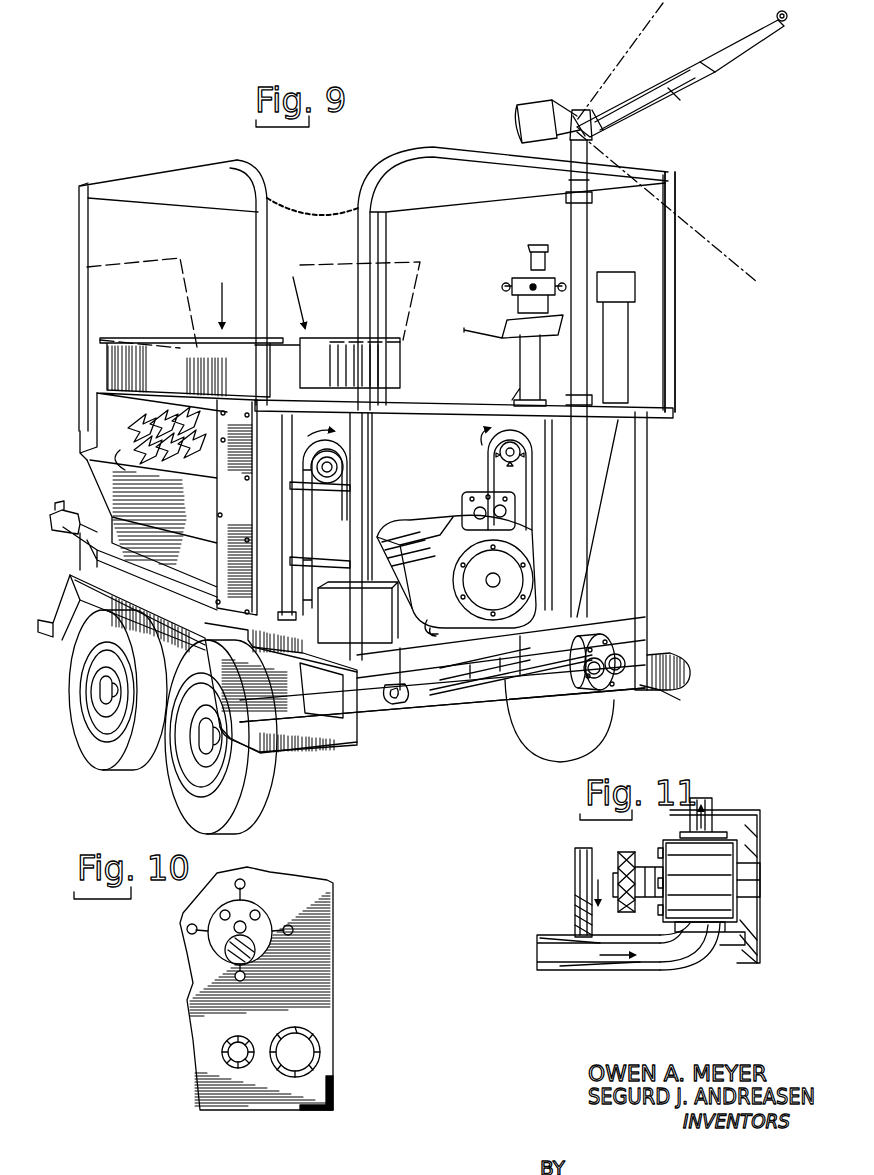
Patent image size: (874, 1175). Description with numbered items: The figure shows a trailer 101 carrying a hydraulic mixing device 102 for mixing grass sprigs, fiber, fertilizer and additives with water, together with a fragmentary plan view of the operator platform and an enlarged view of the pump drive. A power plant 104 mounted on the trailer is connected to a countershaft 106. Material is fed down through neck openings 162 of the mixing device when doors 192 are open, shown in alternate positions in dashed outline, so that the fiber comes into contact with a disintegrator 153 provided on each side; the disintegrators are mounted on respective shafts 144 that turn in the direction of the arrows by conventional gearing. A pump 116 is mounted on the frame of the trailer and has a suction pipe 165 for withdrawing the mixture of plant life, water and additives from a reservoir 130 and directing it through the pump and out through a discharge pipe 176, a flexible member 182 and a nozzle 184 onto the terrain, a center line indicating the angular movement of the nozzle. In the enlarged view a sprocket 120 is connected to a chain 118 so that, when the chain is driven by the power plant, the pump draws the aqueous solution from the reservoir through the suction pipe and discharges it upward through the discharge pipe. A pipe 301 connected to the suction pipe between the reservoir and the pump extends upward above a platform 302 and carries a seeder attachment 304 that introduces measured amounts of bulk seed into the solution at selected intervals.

In FIG. 9, the trailer 101 is at (413, 742).
In FIG. 9, the hydraulic mixing device 102 is at (74, 428).
In FIG. 9, the power plant 104 is at (390, 525).
In FIG. 9, the countershaft 106 is at (345, 704).
In FIG. 9, the pump 116 is at (597, 677).
In FIG. 11, the pump 116 is at (727, 872).
In FIG. 9, the chain 118 is at (447, 692).
In FIG. 11, the chain 118 is at (620, 852).
In FIG. 11, the sprocket 120 is at (636, 852).
In FIG. 9, the reservoir 130 is at (97, 477).
In FIG. 9, the shafts 144 is at (332, 467).
In FIG. 9, the disintegrator 153 is at (125, 442).
In FIG. 9, the neck openings 162 is at (110, 360).
In FIG. 9, the suction pipe 165 is at (533, 682).
In FIG. 11, the suction pipe 165 is at (687, 967).
In FIG. 9, the discharge pipe 176 is at (576, 552).
In FIG. 10, the discharge pipe 176 is at (223, 1050).
In FIG. 11, the discharge pipe 176 is at (713, 800).
In FIG. 9, the flexible member 182 is at (671, 84).
In FIG. 9, the nozzle 184 is at (736, 44).
In FIG. 9, the doors 192 is at (180, 293).
In FIG. 9, the pipe 301 is at (515, 313).
In FIG. 11, the pipe 301 is at (577, 882).
In FIG. 9, the platform 302 is at (666, 413).
In FIG. 10, the platform 302 is at (327, 997).
In FIG. 9, the seeder attachment 304 is at (517, 273).
In FIG. 10, the seeder attachment 304 is at (292, 901).